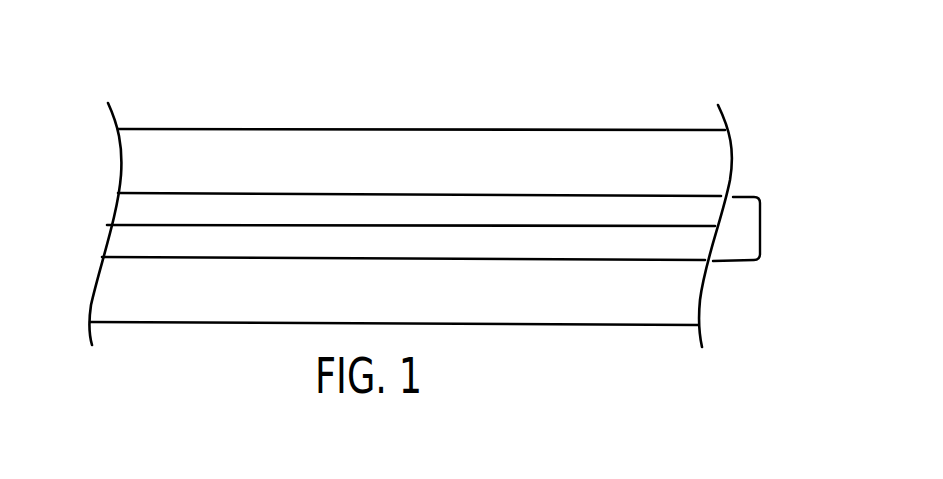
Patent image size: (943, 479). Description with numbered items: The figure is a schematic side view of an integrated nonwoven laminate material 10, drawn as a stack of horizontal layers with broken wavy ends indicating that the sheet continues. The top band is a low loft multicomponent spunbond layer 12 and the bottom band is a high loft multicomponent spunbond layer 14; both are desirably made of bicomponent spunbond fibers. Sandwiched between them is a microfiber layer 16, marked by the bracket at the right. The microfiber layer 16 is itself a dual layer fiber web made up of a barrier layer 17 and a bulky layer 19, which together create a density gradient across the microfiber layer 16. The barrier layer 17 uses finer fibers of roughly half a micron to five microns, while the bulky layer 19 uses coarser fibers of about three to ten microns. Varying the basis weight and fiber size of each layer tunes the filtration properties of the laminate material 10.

The integrated nonwoven laminate material 10 is at (562, 99).
The low loft multicomponent spunbond layer 12 is at (715, 157).
The high loft multicomponent spunbond layer 14 is at (687, 293).
The microfiber layer 16 is at (760, 229).
The barrier layer 17 is at (125, 206).
The bulky layer 19 is at (115, 242).